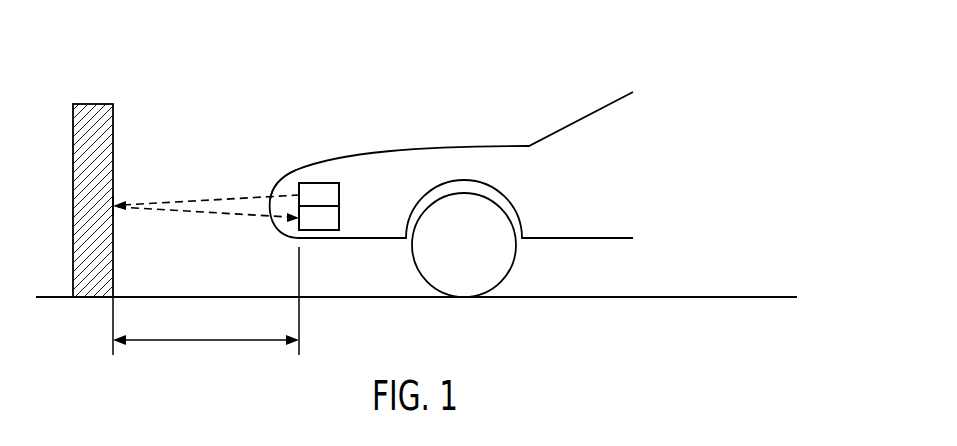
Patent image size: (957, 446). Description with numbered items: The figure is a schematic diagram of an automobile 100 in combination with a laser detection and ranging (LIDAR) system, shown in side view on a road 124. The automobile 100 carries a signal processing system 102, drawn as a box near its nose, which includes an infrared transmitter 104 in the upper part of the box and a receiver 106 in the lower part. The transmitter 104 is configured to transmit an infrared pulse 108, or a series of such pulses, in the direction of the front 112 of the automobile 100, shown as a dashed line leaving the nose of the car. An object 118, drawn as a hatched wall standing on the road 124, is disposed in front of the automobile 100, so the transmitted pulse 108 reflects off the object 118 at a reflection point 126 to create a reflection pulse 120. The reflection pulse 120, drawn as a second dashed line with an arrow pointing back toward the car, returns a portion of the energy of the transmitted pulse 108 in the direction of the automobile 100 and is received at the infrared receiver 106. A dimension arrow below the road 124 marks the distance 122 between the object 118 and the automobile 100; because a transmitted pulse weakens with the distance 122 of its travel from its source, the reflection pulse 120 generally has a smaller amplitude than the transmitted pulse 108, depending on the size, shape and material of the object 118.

The automobile 100 is at (480, 146).
The signal processing system 102 is at (352, 178).
The infrared transmitter 104 is at (318, 183).
The receiver 106 is at (317, 230).
The infrared pulse 108 is at (180, 200).
The front 112 is at (278, 192).
The object 118 is at (92, 104).
The reflection pulse 120 is at (204, 224).
The distance 122 is at (206, 341).
The road 124 is at (715, 297).
The reflection point 126 is at (116, 210).